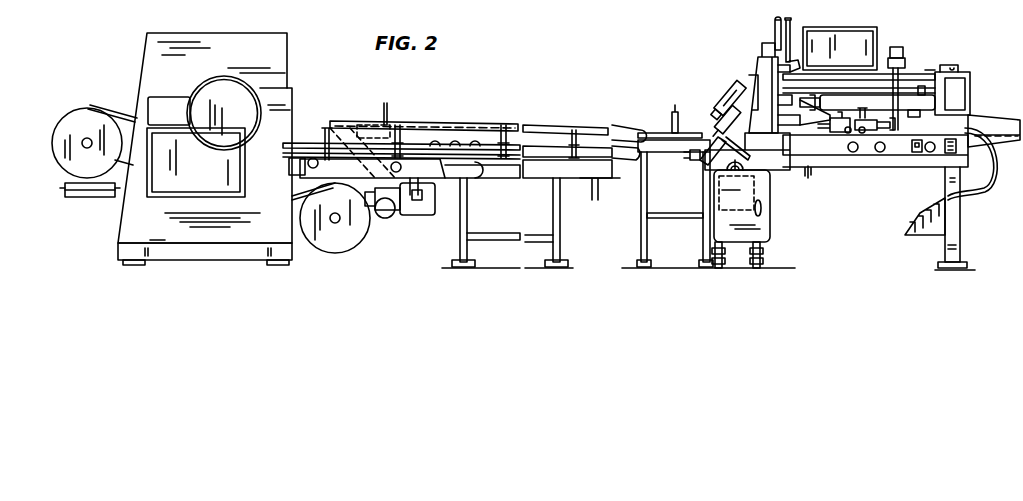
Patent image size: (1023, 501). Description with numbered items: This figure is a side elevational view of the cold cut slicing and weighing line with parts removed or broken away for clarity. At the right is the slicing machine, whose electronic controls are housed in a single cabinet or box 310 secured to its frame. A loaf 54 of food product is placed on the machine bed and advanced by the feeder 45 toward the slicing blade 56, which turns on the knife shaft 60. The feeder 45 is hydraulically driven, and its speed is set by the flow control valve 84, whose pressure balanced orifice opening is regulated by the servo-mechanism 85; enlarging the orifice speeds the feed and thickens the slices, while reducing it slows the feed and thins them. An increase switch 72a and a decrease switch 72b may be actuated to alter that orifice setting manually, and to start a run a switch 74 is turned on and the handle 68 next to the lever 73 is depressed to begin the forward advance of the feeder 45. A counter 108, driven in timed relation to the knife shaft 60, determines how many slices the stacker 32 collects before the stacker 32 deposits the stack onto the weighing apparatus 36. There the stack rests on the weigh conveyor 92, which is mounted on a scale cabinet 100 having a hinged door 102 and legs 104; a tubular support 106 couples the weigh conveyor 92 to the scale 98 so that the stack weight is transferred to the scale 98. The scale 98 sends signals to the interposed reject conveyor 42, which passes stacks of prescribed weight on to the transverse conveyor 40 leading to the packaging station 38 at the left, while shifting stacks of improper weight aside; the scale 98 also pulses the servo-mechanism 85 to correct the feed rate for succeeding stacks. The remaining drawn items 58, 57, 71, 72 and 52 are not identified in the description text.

The packaging station 38 is at (256, 30).
The transverse conveyor 40 is at (490, 120).
The reject conveyor 42 is at (678, 119).
The stacker 32 is at (729, 86).
The weighing apparatus 36 is at (733, 128).
The support column 58 is at (757, 52).
The slicing blade 56 is at (772, 42).
The cabinet or box 310 is at (873, 22).
The loaf 54 is at (840, 163).
The servo-mechanism 85 is at (900, 48).
The flow control valve 84 is at (903, 63).
The knife shaft 60 is at (925, 97).
The counter 108 is at (958, 64).
The control panel 57 is at (787, 120).
The feeder 45 is at (841, 163).
The gauge 71 is at (880, 152).
The increase switch 72a is at (914, 152).
The gauge 72 is at (931, 153).
The lever 73 is at (952, 153).
The switch 74 is at (965, 151).
The handle 68 is at (855, 153).
The decrease switch 72b is at (917, 153).
The weigh conveyor 92 is at (725, 160).
The tubular support 106 is at (736, 172).
The scale 98 is at (757, 196).
The hinged door 102 is at (764, 223).
The scale cabinet 100 is at (738, 248).
The legs 104 is at (727, 250).
The leg 52 is at (945, 255).